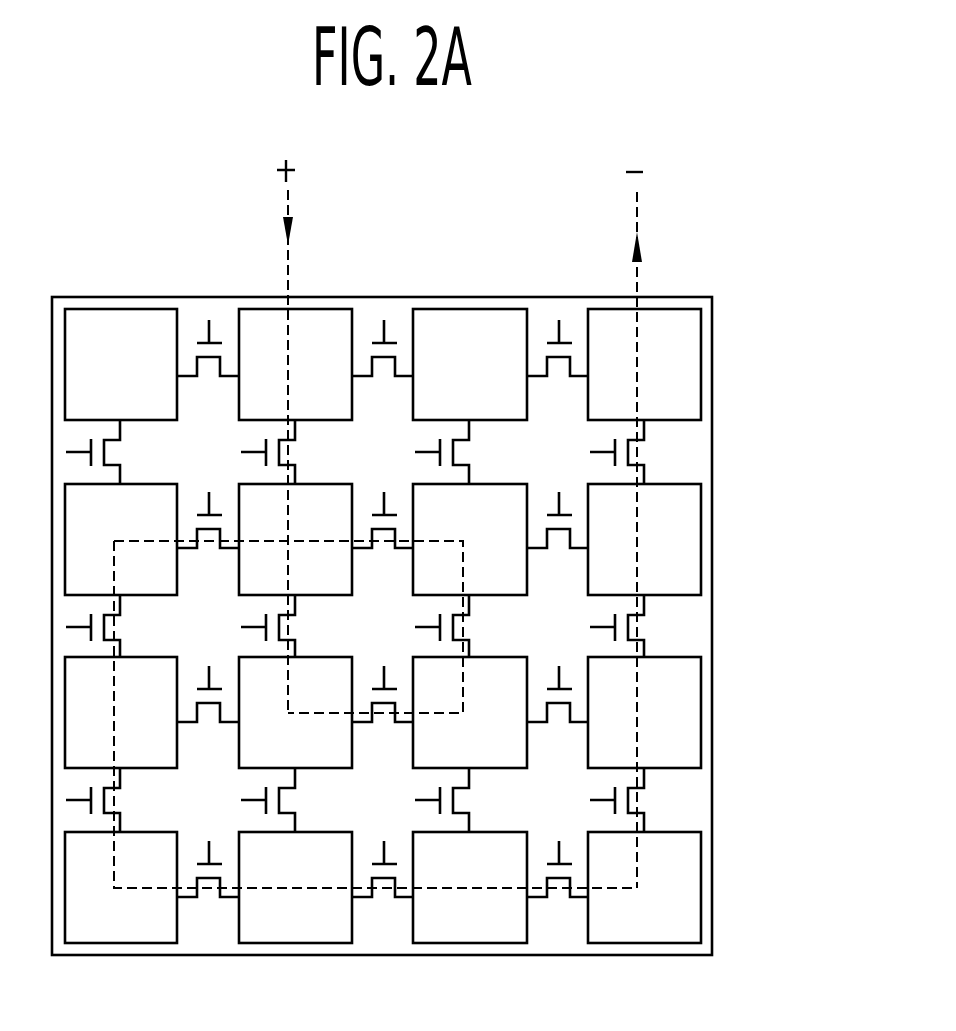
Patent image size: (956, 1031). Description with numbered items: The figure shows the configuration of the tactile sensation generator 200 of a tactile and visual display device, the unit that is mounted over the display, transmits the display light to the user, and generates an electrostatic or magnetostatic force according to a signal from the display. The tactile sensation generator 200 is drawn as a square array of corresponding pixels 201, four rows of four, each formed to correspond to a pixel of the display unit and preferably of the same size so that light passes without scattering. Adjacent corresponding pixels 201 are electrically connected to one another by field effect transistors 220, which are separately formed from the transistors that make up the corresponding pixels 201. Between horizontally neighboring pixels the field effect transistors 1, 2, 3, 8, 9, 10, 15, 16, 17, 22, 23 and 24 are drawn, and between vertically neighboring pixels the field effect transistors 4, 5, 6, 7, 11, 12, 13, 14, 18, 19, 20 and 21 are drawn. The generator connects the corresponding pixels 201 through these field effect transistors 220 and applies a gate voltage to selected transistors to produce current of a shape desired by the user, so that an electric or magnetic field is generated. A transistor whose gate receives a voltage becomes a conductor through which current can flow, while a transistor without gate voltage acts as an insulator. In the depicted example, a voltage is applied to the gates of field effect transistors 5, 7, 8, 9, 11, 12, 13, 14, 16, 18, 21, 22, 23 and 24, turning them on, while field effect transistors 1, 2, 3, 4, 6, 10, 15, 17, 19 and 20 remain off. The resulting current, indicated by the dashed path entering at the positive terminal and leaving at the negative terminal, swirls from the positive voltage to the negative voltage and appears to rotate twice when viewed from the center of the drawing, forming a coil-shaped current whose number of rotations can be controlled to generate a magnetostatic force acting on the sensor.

The field effect transistor 1 is at (208, 371).
The field effect transistor 2 is at (382, 371).
The field effect transistor 3 is at (557, 371).
The field effect transistor 4 is at (105, 452).
The field effect transistor 5 is at (280, 452).
The field effect transistor 6 is at (454, 452).
The field effect transistor 7 is at (629, 452).
The field effect transistor 8 is at (208, 543).
The field effect transistor 9 is at (382, 543).
The field effect transistor 10 is at (557, 543).
The field effect transistor 11 is at (112, 626).
The field effect transistor 12 is at (287, 626).
The field effect transistor 13 is at (461, 626).
The field effect transistor 14 is at (636, 626).
The field effect transistor 15 is at (208, 717).
The field effect transistor 16 is at (382, 717).
The field effect transistor 17 is at (557, 717).
The field effect transistor 18 is at (112, 800).
The field effect transistor 19 is at (287, 800).
The field effect transistor 20 is at (461, 800).
The field effect transistor 21 is at (636, 800).
The field effect transistor 22 is at (208, 892).
The field effect transistor 23 is at (382, 892).
The field effect transistor 24 is at (557, 892).
The tactile sensation generator 200 is at (713, 427).
The corresponding pixel 201 is at (117, 320).
The field effect transistor 220 is at (208, 310).